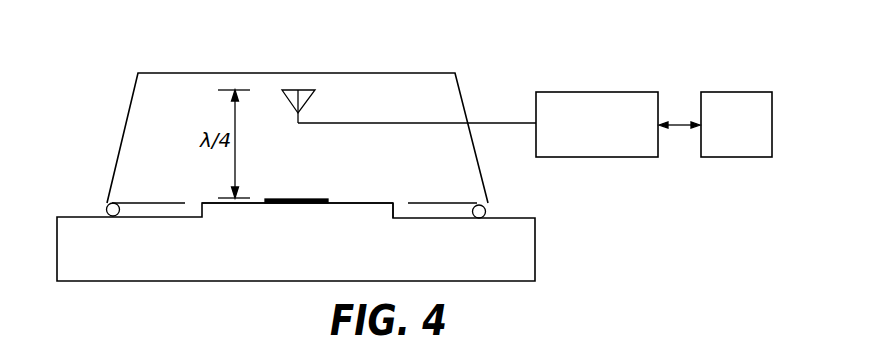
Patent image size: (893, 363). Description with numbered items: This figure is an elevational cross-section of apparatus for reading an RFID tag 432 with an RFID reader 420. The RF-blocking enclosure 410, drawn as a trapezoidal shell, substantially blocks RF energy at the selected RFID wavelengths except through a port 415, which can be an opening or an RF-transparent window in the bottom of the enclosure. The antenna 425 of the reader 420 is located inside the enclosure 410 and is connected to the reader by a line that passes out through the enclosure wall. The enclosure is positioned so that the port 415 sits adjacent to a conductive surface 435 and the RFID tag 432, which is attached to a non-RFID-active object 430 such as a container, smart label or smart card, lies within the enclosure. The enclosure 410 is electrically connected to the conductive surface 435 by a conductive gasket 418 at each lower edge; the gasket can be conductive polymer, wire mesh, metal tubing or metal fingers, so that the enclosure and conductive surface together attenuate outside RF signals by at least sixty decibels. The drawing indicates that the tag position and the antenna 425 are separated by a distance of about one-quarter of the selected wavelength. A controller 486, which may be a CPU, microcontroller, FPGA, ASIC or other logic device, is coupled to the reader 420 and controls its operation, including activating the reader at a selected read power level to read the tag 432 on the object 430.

The RF-blocking enclosure 410 is at (124, 120).
The port 415 is at (404, 198).
The conductive gasket 418 is at (106, 208).
The RFID reader 420 is at (558, 92).
The antenna 425 is at (309, 103).
The non-RFID-active object 430 is at (536, 237).
The RFID tag 432 is at (305, 199).
The conductive surface 435 is at (442, 220).
The controller 486 is at (728, 92).